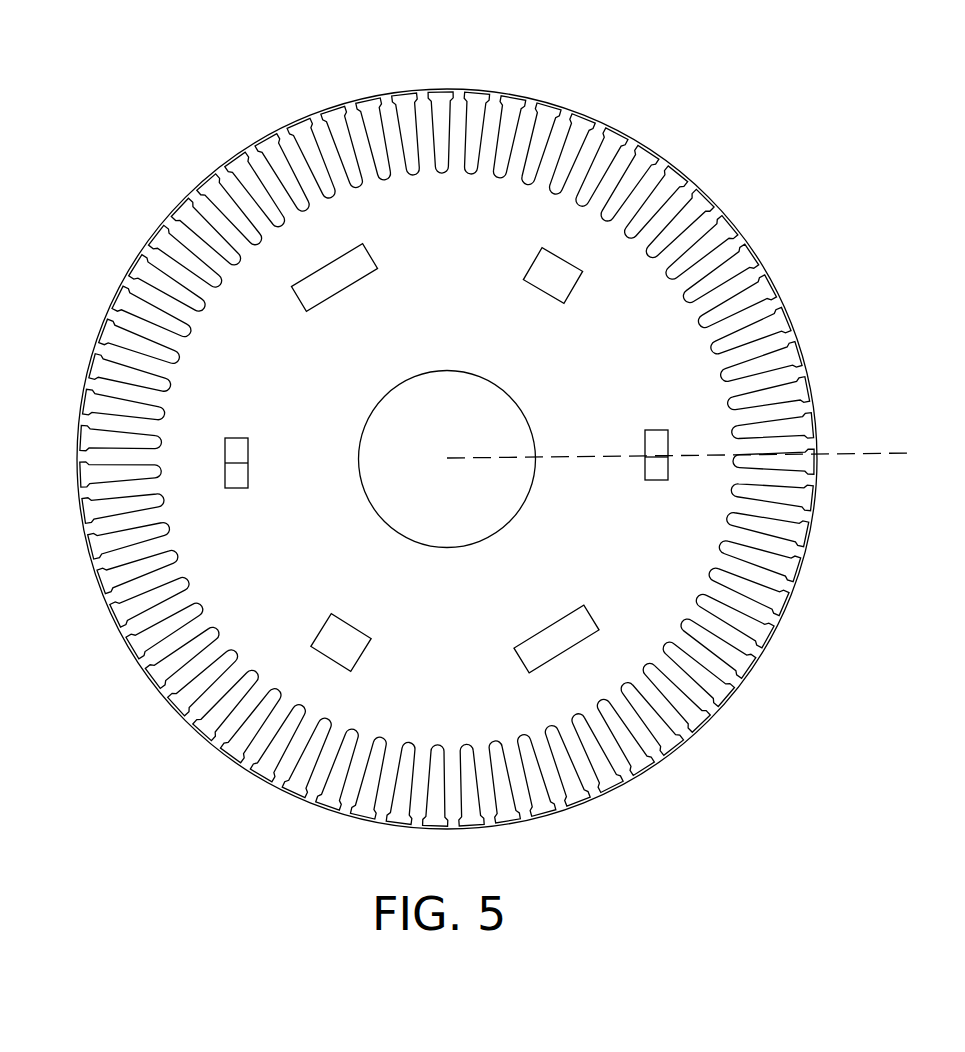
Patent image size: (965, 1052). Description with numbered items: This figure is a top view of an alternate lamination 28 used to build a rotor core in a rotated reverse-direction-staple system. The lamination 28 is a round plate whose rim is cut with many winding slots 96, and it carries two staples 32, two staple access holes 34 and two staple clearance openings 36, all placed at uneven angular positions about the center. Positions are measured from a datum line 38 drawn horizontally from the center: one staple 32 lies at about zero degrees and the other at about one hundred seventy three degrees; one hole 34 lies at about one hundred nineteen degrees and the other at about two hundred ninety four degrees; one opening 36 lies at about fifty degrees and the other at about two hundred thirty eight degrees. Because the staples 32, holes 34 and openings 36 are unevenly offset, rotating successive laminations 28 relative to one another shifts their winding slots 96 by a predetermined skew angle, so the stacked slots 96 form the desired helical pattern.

The lamination 28 is at (718, 206).
The staple 32 is at (248, 477).
The staple access hole 34 is at (578, 284).
The staple clearance opening 36 is at (296, 297).
The datum line 38 is at (858, 453).
The winding slot 96 is at (412, 117).